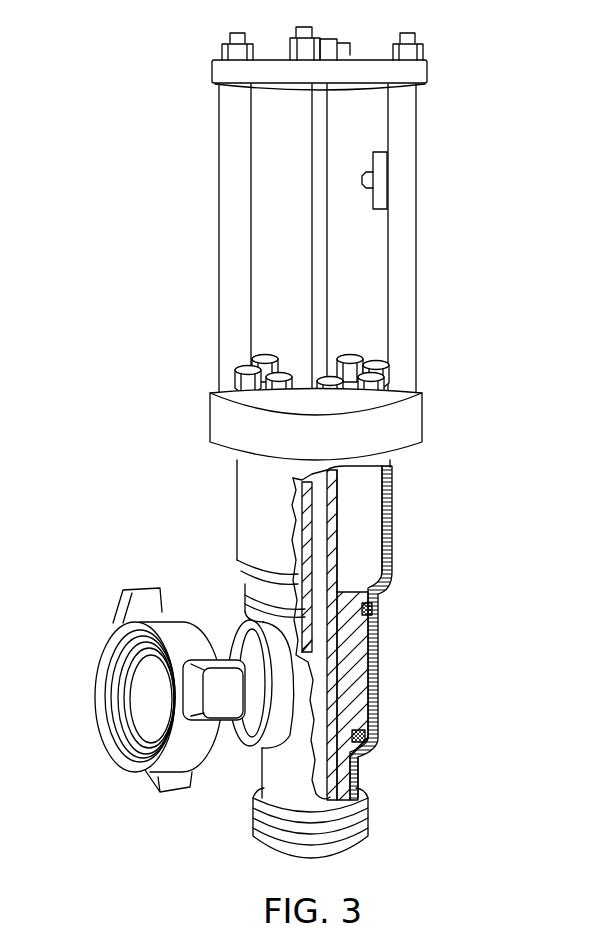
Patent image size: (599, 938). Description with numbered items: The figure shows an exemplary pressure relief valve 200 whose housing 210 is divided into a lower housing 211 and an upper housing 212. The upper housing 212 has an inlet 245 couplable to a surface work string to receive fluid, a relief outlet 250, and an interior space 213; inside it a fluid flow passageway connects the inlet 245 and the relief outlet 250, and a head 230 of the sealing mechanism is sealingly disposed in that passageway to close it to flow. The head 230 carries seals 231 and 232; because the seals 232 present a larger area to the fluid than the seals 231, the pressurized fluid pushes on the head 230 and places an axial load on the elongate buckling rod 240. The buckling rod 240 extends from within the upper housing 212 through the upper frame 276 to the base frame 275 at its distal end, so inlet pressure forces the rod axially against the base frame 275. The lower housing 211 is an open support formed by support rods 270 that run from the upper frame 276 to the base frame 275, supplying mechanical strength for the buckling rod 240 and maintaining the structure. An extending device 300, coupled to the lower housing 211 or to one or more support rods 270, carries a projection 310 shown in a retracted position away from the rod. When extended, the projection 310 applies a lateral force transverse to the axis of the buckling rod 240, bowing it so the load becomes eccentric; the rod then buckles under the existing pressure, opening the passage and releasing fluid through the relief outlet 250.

The pressure relief valve 200 is at (283, 436).
The housing 210 is at (286, 243).
The lower housing 211 is at (233, 188).
The upper housing 212 is at (282, 659).
The interior space 213 is at (357, 512).
The head 230 is at (352, 660).
The seals 231 is at (370, 738).
The seals 232 is at (375, 605).
The buckling rod 240 is at (320, 108).
The inlet 245 is at (107, 637).
The relief outlet 250 is at (368, 817).
The support rods 270 is at (231, 288).
The base frame 275 is at (210, 73).
The upper frame 276 is at (407, 428).
The extending device 300 is at (363, 200).
The projection 310 is at (362, 180).